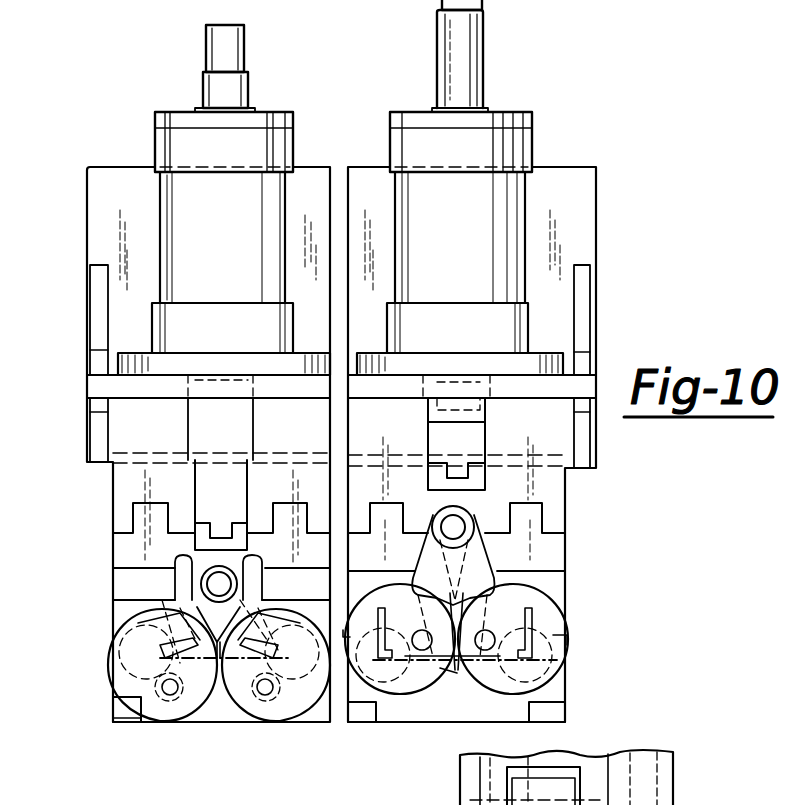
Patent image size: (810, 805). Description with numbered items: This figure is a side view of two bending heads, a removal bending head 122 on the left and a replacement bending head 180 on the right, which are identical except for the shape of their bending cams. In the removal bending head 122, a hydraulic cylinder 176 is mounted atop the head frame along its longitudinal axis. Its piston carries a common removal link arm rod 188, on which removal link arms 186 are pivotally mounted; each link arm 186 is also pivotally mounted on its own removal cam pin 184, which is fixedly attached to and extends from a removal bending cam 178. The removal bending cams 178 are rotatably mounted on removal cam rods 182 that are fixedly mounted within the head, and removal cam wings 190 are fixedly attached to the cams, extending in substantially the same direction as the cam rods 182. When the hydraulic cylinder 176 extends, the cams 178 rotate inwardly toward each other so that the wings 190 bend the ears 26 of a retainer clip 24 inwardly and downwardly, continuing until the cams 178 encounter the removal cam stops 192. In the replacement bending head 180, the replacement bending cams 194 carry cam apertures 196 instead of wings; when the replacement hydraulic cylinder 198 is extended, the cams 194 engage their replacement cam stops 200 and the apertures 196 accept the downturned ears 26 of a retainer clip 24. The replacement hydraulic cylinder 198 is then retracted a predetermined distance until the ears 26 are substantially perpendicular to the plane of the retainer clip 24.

The removal bending head 122 is at (88, 166).
The replacement bending head 180 is at (598, 165).
The hydraulic cylinder 176 is at (187, 228).
The replacement hydraulic cylinder 198 is at (470, 187).
The removal link arm rod 188 is at (217, 577).
The removal link arm 186 is at (178, 605).
The removal cam rod 182 is at (137, 645).
The removal bending cam 178 is at (142, 707).
The removal cam pin 184 is at (184, 692).
The removal cam wing 190 is at (280, 663).
The removal cam stop 192 is at (115, 708).
The replacement bending cam 194 is at (542, 603).
The cam aperture 196 is at (533, 623).
The ear 26 is at (553, 640).
The replacement cam stop 200 is at (550, 713).
The retainer clip 24 is at (437, 670).